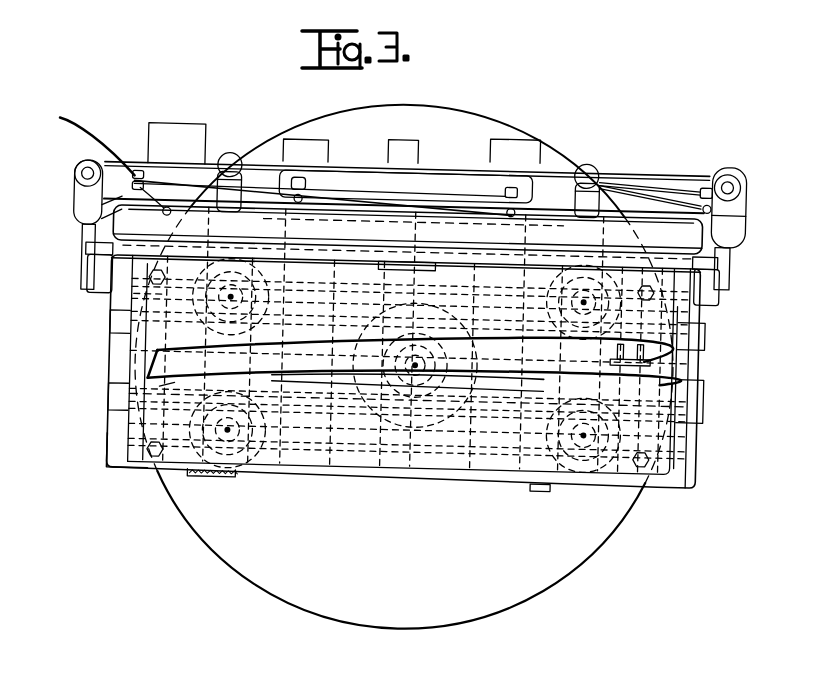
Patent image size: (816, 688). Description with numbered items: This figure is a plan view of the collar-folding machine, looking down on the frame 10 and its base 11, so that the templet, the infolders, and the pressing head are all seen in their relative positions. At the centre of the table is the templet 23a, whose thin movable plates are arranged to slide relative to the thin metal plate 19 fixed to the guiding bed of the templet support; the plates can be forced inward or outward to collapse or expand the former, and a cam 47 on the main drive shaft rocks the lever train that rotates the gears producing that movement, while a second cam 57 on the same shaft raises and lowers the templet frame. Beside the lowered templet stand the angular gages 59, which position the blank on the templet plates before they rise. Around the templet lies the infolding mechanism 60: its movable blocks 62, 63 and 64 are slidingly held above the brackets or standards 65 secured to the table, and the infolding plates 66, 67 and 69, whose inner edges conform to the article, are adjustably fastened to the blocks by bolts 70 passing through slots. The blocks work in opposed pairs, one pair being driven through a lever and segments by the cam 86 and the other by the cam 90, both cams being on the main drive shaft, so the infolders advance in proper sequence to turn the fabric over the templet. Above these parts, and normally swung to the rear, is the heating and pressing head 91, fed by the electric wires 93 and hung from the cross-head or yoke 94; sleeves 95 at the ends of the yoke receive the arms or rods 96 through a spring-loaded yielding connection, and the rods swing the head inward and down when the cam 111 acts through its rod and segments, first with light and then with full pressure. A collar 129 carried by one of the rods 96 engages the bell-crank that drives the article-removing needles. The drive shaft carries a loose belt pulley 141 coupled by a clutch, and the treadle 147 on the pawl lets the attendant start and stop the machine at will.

The frame 10 is at (404, 337).
The base 11 is at (257, 576).
The plate 19 is at (187, 373).
The templet 23a is at (422, 376).
The cam 47 is at (350, 139).
The cam 57 is at (481, 150).
The gages 59 is at (167, 393).
The infolding mechanism 60 is at (424, 372).
The movable block 62 is at (122, 457).
The movable block 63 is at (690, 472).
The movable block 64 is at (690, 333).
The brackets or standards 65 is at (697, 378).
The infolding plate 66 is at (146, 343).
The infolding plate 67 is at (138, 436).
The infolding plate 69 is at (664, 354).
The bolts 70 is at (137, 470).
The cam 86 is at (535, 157).
The cam 90 is at (238, 162).
The heating and pressing head 91 is at (134, 237).
The wires 93 is at (74, 139).
The cross-head or yoke 94 is at (462, 159).
The sleeves 95 is at (81, 216).
The arms or rods 96 is at (86, 290).
The cam 111 is at (406, 122).
The collar 129 is at (719, 164).
The belt pulley 141 is at (176, 111).
The treadle 147 is at (216, 482).